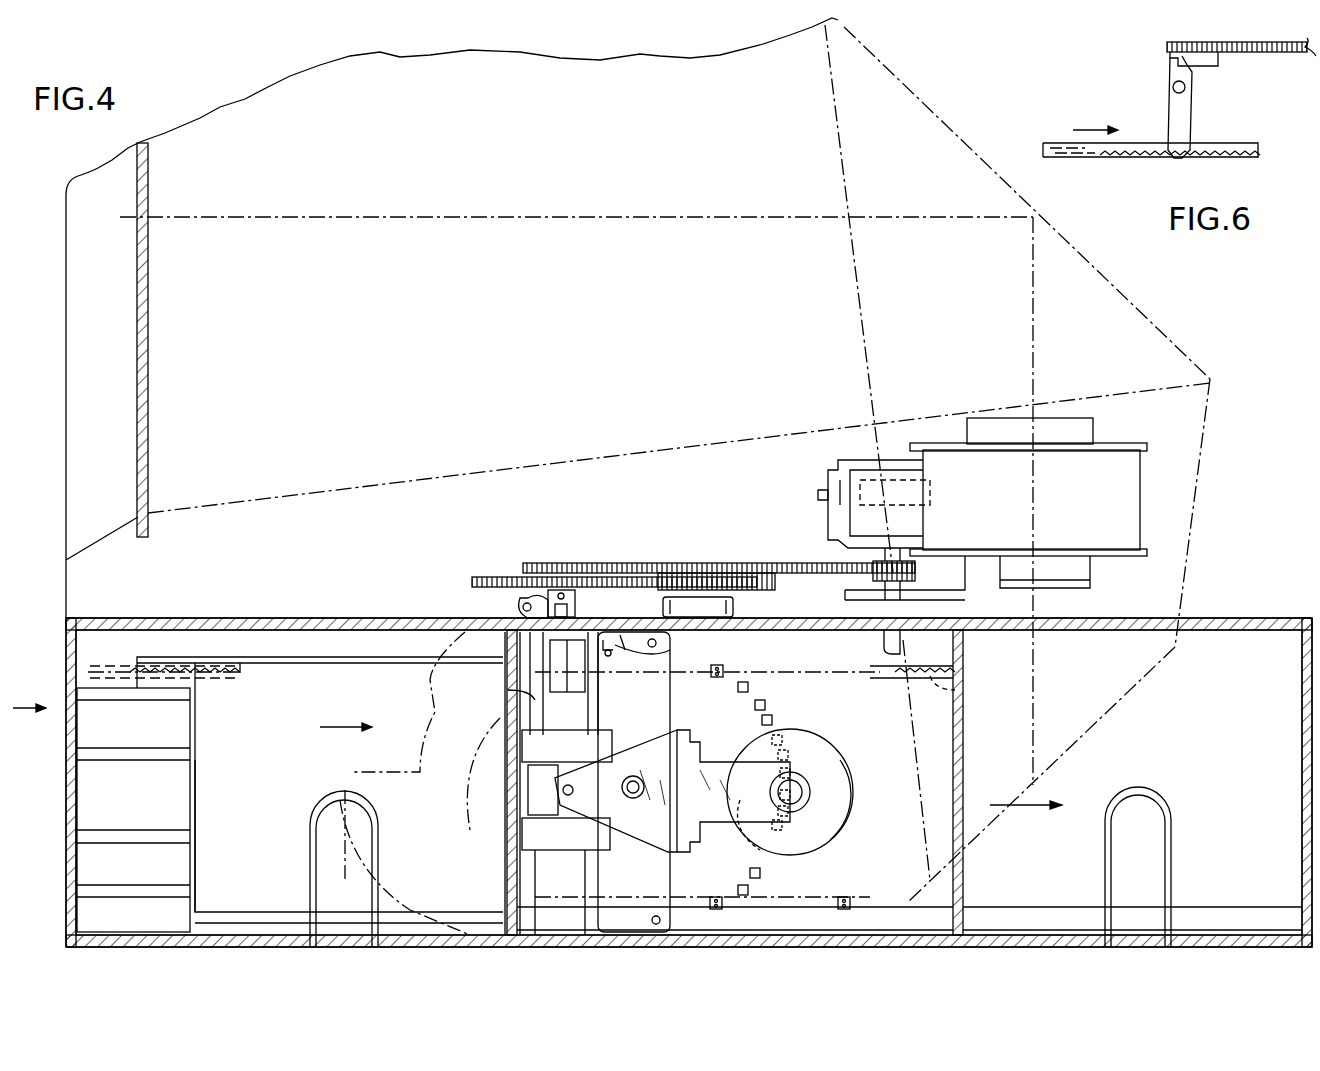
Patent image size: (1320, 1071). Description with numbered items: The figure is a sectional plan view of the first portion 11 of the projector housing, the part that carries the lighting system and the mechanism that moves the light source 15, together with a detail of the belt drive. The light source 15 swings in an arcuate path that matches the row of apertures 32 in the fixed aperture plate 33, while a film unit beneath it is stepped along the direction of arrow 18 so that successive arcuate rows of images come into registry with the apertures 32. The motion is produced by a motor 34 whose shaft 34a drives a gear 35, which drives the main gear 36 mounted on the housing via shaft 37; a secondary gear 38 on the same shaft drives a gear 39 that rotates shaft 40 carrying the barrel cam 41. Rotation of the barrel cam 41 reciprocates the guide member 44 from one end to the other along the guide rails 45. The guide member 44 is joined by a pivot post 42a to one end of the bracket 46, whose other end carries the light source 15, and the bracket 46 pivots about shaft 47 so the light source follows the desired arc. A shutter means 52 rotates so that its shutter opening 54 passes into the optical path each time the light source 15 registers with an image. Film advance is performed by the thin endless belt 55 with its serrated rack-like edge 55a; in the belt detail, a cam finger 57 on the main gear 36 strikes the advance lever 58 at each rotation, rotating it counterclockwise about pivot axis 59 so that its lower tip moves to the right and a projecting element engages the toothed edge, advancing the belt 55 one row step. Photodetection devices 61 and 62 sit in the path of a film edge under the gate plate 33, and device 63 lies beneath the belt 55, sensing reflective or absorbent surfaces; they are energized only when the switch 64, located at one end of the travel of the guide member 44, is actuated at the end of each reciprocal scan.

In FIG. 4, the first portion 11 is at (24, 696).
In FIG. 4, the light source 15 is at (835, 768).
In FIG. 4, the arrow 18 is at (1025, 805).
In FIG. 4, the apertures 32 is at (768, 705).
In FIG. 4, the aperture plate 33 is at (716, 712).
In FIG. 4, the motor 34 is at (1172, 482).
In FIG. 4, the shaft 34a is at (880, 636).
In FIG. 4, the gear 35 is at (925, 560).
In FIG. 4, the main gear 36 is at (738, 562).
In FIG. 6, the main gear 36 is at (1292, 60).
In FIG. 4, the shaft 37 is at (677, 572).
In FIG. 4, the secondary gear 38 is at (780, 590).
In FIG. 4, the gear 39 is at (472, 582).
In FIG. 4, the shaft 40 is at (580, 606).
In FIG. 4, the barrel cam 41 is at (575, 708).
In FIG. 4, the pivot post 42a is at (560, 795).
In FIG. 4, the guide member 44 is at (606, 735).
In FIG. 4, the guide rails 45 is at (512, 695).
In FIG. 4, the bracket 46 is at (636, 830).
In FIG. 4, the shaft 47 is at (633, 798).
In FIG. 4, the shutter means 52 is at (344, 790).
In FIG. 4, the shutter opening 54 is at (327, 726).
In FIG. 4, the endless belt 55 is at (940, 664).
In FIG. 6, the endless belt 55 is at (1232, 143).
In FIG. 4, the serrated rack-like edge 55a is at (950, 690).
In FIG. 6, the serrated rack-like edge 55a is at (1220, 160).
In FIG. 6, the cam finger 57 is at (1205, 66).
In FIG. 6, the advance lever 58 is at (1186, 108).
In FIG. 6, the pivot axis 59 is at (1170, 87).
In FIG. 4, the photodetection device 61 is at (838, 905).
In FIG. 4, the photodetection device 62 is at (722, 905).
In FIG. 4, the photodetection device 63 is at (725, 668).
In FIG. 4, the switch 64 is at (670, 650).